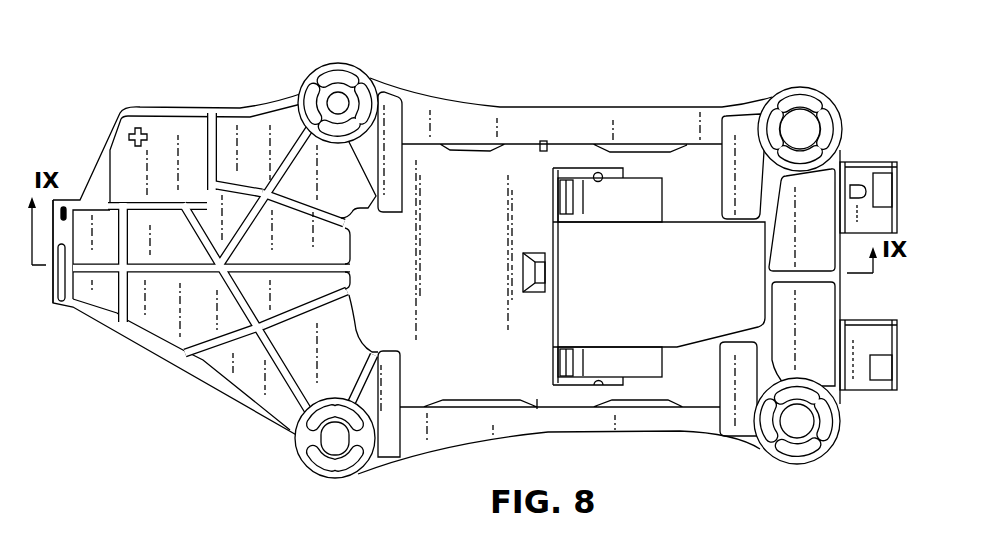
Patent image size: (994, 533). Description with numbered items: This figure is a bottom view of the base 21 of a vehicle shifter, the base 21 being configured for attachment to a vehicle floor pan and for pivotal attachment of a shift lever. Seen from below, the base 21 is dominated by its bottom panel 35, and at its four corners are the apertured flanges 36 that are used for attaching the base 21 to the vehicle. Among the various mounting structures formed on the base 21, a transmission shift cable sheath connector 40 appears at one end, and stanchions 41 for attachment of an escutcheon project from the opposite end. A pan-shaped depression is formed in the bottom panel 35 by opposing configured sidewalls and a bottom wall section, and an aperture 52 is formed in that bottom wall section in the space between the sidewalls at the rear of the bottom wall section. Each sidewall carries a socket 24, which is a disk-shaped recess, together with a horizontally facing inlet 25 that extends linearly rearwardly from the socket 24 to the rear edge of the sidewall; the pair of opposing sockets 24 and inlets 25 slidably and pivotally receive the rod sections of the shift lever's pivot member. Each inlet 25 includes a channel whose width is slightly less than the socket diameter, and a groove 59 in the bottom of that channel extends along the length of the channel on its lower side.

The base 21 is at (181, 74).
The apertured flanges 36 is at (340, 72).
The groove 59 is at (597, 172).
The stanchions 41 is at (893, 188).
The sockets 24 is at (572, 214).
The inlets 25 is at (622, 214).
The bottom panel 35 is at (470, 285).
The aperture 52 is at (701, 289).
The transmission shift cable sheath connector 40 is at (62, 308).